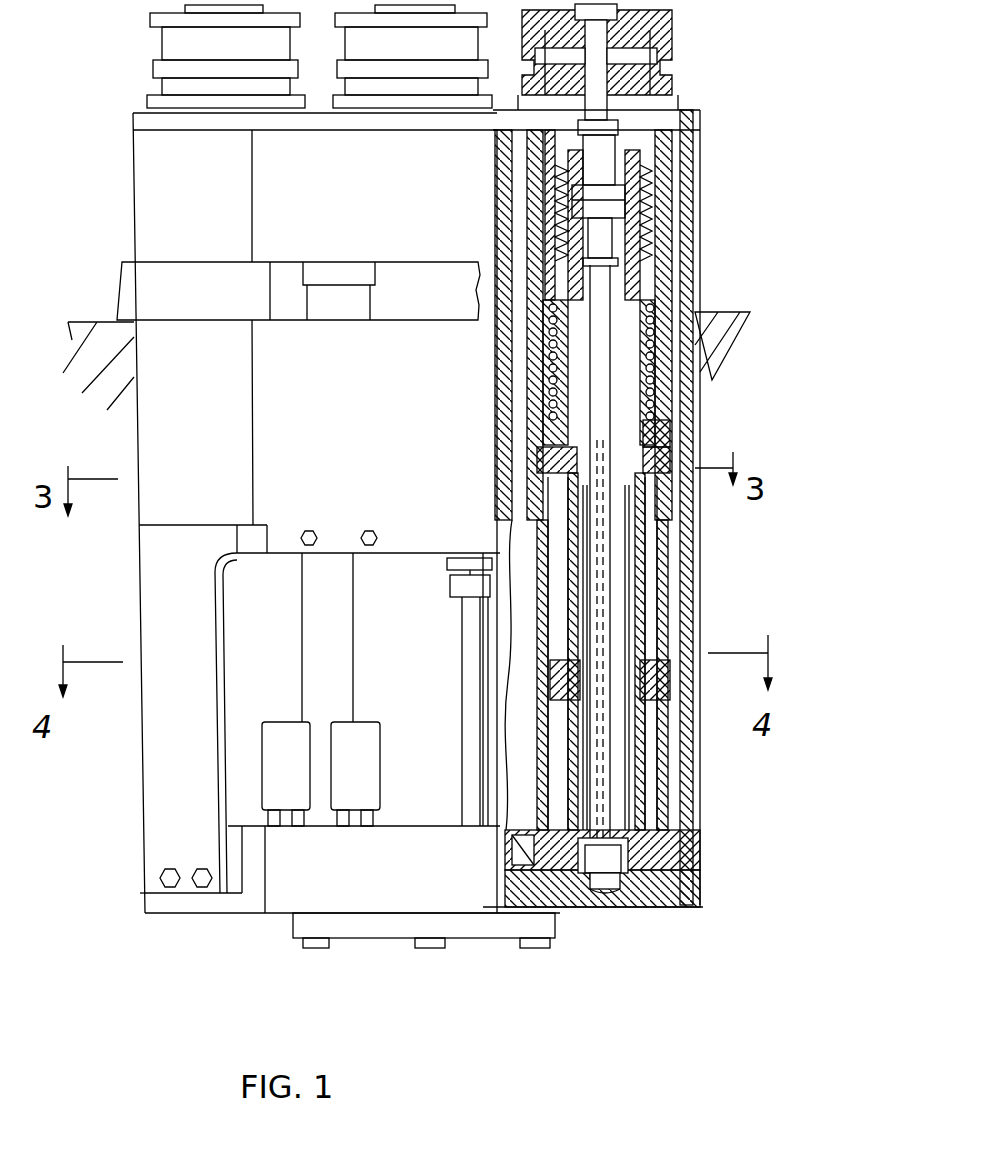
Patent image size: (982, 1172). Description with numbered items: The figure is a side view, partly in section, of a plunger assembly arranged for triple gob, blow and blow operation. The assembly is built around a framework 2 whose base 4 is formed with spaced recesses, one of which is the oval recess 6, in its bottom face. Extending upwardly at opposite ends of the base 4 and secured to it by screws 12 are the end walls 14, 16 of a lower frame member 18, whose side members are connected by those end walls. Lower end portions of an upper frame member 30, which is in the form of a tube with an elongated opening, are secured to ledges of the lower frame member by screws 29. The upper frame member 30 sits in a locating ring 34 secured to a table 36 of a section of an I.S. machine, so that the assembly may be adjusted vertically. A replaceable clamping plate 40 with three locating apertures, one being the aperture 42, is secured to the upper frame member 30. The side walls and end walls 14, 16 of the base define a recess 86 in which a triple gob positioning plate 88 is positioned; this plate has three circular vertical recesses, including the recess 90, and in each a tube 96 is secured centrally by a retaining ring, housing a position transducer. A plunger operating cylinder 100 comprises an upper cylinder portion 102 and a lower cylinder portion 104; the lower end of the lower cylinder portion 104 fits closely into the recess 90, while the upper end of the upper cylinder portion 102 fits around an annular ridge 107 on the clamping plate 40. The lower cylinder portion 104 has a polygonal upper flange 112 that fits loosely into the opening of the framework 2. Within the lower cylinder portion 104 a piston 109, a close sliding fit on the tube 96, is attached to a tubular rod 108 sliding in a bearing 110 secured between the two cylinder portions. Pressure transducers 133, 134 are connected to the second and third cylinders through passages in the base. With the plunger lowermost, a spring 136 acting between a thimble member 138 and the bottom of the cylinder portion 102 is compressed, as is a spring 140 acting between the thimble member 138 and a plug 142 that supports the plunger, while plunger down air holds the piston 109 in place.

The framework 2 is at (105, 565).
The base 4 is at (688, 907).
The recess 6 is at (583, 900).
The screws 12 is at (142, 893).
The end wall 14 is at (700, 744).
The end wall 16 is at (152, 767).
The lower frame member 18 is at (152, 612).
The screws 29 is at (369, 531).
The upper frame member 30 is at (216, 448).
The locating ring 34 is at (140, 290).
The table 36 is at (92, 360).
The clamping plate 40 is at (135, 123).
The locating aperture 42 is at (690, 112).
The recess 86 is at (700, 845).
The positioning plate 88 is at (658, 895).
The vertical recess 90 is at (545, 885).
The tube 96 is at (700, 798).
The plunger operating cylinder 100 is at (660, 570).
The upper cylinder portion 102 is at (700, 418).
The lower cylinder portion 104 is at (700, 598).
The annular ridge 107 is at (690, 150).
The tubular rod 108 is at (700, 385).
The piston 109 is at (700, 633).
The bearing 110 is at (700, 437).
The upper flange 112 is at (500, 497).
The transducer 133 is at (365, 735).
The transducer 134 is at (280, 745).
The spring 136 is at (750, 360).
The thimble member 138 is at (690, 298).
The spring 140 is at (690, 215).
The plug 142 is at (693, 255).